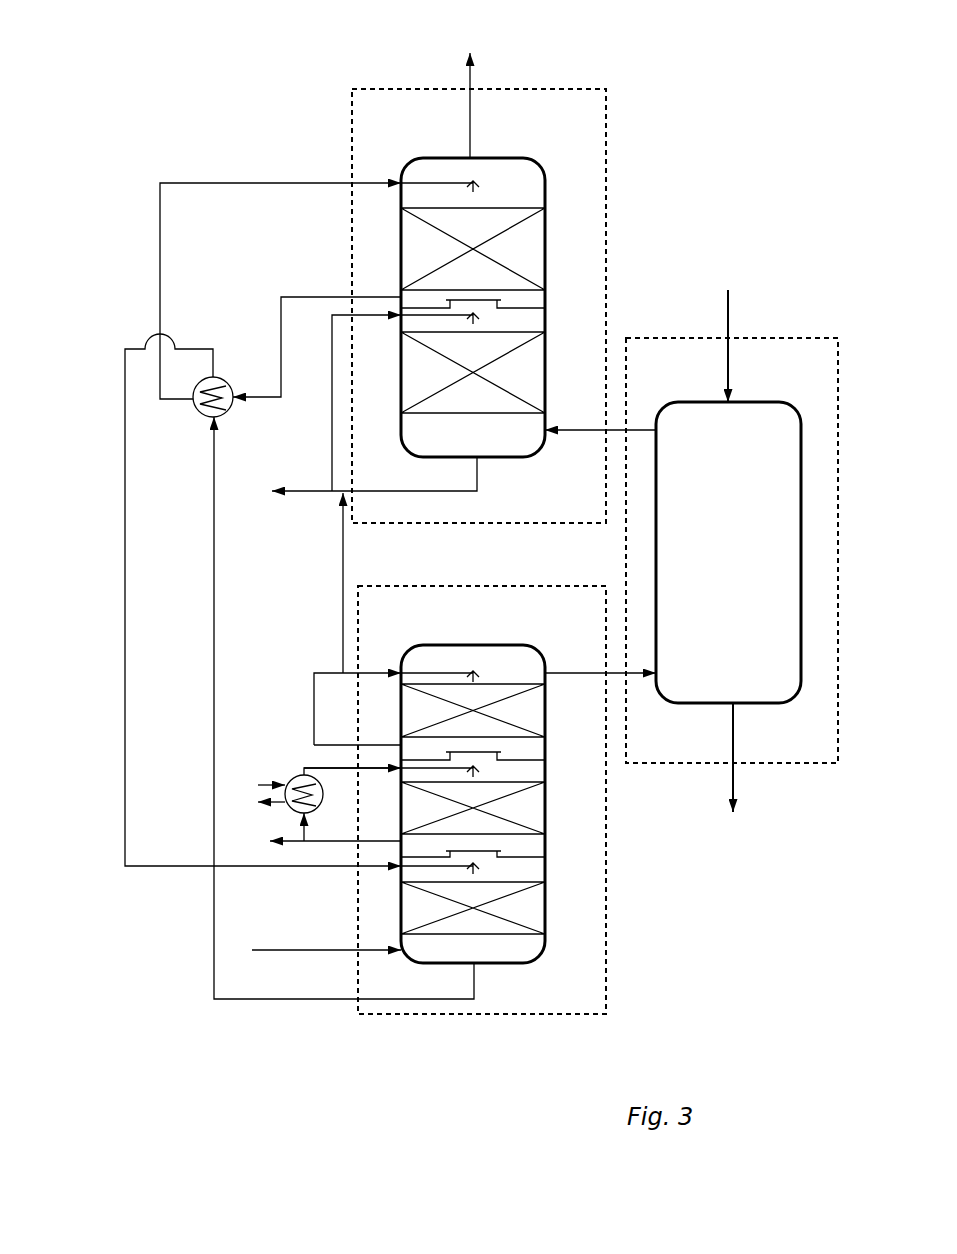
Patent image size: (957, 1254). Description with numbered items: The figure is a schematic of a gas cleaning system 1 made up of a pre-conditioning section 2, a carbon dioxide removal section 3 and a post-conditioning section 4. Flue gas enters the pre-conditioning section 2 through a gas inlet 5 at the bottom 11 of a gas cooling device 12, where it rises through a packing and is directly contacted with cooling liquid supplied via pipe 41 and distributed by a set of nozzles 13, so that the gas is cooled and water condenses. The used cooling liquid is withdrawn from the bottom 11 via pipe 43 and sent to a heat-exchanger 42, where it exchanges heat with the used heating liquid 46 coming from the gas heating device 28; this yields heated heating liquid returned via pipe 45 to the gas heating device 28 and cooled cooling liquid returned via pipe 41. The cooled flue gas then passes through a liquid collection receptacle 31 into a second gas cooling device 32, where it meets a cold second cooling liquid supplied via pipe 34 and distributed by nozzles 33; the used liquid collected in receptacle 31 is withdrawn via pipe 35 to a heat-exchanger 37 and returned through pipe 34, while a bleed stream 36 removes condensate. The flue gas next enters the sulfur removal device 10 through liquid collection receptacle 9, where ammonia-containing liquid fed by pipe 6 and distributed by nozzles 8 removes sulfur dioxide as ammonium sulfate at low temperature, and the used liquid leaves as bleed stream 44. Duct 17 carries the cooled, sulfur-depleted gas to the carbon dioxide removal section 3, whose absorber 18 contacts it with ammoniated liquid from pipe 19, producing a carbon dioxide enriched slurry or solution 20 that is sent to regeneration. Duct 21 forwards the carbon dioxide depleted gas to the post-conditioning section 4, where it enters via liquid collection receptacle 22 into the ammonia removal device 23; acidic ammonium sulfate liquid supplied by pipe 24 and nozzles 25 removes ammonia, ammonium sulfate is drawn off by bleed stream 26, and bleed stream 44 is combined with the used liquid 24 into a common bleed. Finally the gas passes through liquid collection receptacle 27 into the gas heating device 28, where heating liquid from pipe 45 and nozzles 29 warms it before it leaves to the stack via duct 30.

The gas cleaning system 1 is at (265, 85).
The pre-conditioning section 2 is at (610, 903).
The CO2 removal section 3 is at (788, 338).
The post-conditioning section 4 is at (613, 150).
The gas inlet 5 is at (300, 950).
The pipe 6 is at (314, 700).
The set of nozzles 8 is at (438, 673).
The liquid collection receptacle 9 is at (530, 758).
The sulfur removal device 10 is at (535, 708).
The bottom 11 is at (530, 951).
The gas cooling device 12 is at (530, 901).
The set of nozzles 13 is at (476, 860).
The duct 17 is at (571, 673).
The CO2 absorber 18 is at (782, 416).
The pipe 19 is at (728, 318).
The CO2 enriched slurry or solution 20 is at (733, 790).
The duct 21 is at (588, 430).
The liquid collection receptacle 22 is at (422, 435).
The ammonia removal device 23 is at (408, 388).
The pipe 24 is at (332, 402).
The set of nozzles 25 is at (420, 322).
The bleed stream 26 is at (296, 494).
The liquid collection receptacle 27 is at (525, 306).
The gas heating device 28 is at (535, 264).
The set of nozzles 29 is at (455, 183).
The duct 30 is at (470, 130).
The liquid collection receptacle 31 is at (530, 852).
The second gas cooling device 32 is at (535, 801).
The set of nozzles 33 is at (415, 769).
The pipe 34 is at (303, 775).
The pipe 35 is at (340, 841).
The bleed stream 36 is at (304, 842).
The heat-exchanger 37 is at (285, 782).
The pipe 41 is at (242, 866).
The heat-exchanger 42 is at (205, 414).
The pipe 43 is at (272, 999).
The bleed stream 44 is at (343, 555).
The pipe 45 is at (205, 183).
The used heating liquid 46 is at (300, 297).